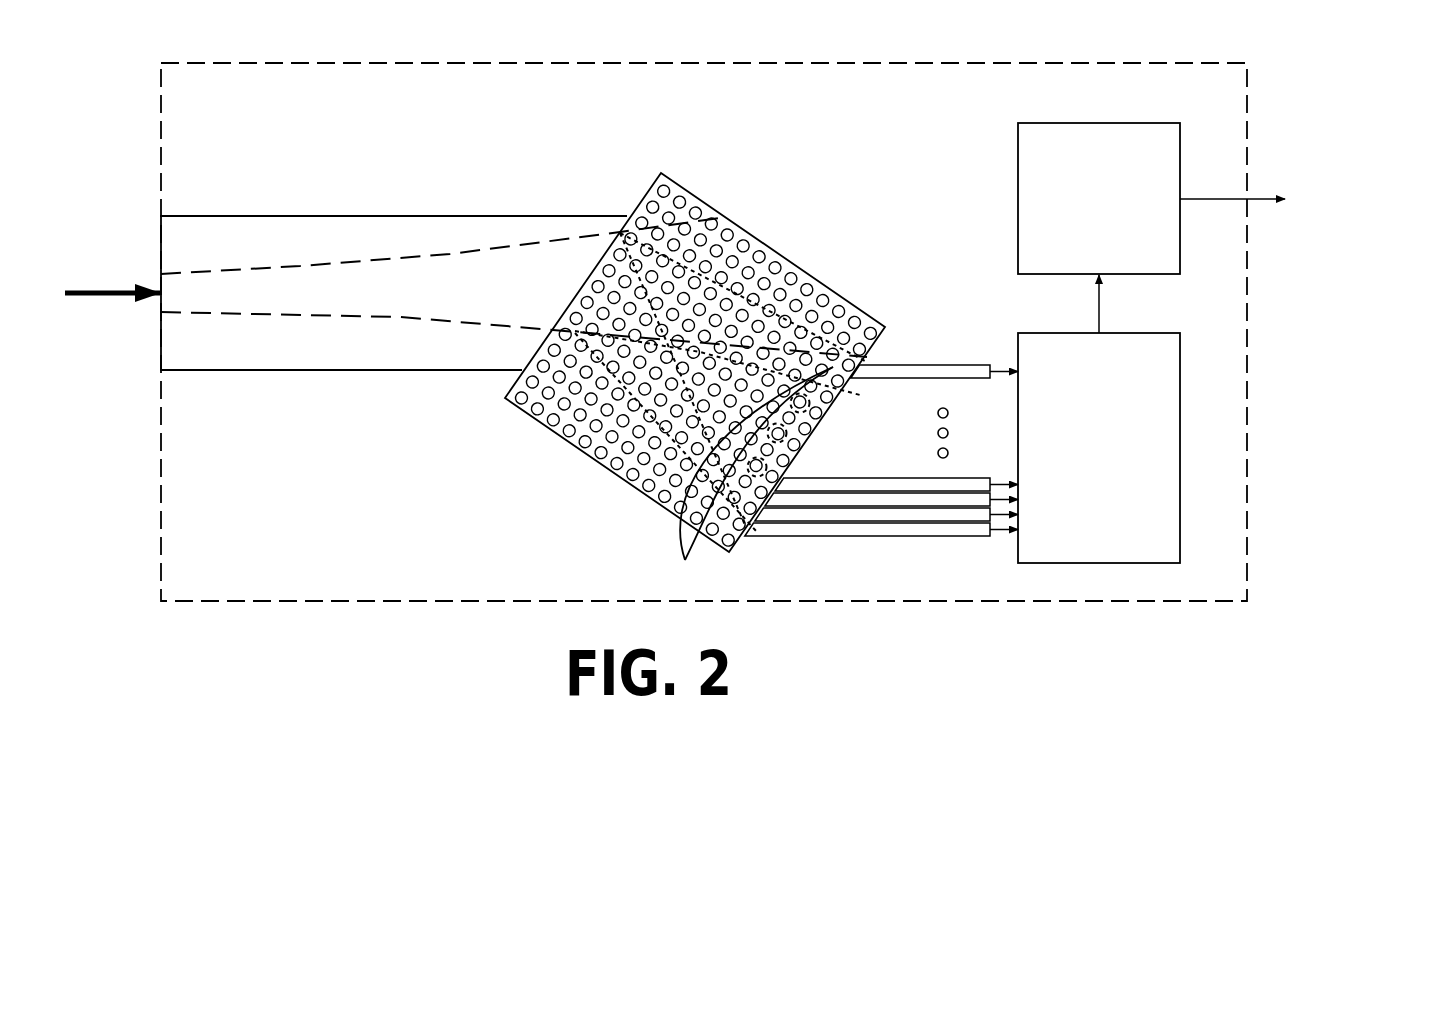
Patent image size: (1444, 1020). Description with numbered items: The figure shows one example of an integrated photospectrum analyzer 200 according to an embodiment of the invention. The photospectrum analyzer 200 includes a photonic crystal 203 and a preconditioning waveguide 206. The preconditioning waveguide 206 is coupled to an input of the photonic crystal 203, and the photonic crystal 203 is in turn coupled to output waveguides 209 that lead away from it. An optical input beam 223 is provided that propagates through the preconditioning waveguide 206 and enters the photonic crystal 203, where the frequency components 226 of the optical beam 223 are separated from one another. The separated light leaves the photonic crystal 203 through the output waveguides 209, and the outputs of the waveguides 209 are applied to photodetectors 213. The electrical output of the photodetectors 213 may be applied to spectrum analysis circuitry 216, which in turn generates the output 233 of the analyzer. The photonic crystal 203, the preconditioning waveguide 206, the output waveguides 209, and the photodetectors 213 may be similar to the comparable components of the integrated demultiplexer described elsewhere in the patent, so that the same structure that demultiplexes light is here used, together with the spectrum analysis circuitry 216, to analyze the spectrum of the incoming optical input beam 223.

The integrated photospectrum analyzer 200 is at (438, 150).
The photonic crystal 203 is at (797, 266).
The preconditioning waveguide 206 is at (303, 371).
The output waveguides 209 is at (840, 537).
The photodetectors 213 is at (1080, 490).
The spectrum analysis circuitry 216 is at (1080, 256).
The optical input beam 223 is at (120, 284).
The frequency components 226 is at (750, 479).
The output 233 is at (1381, 230).